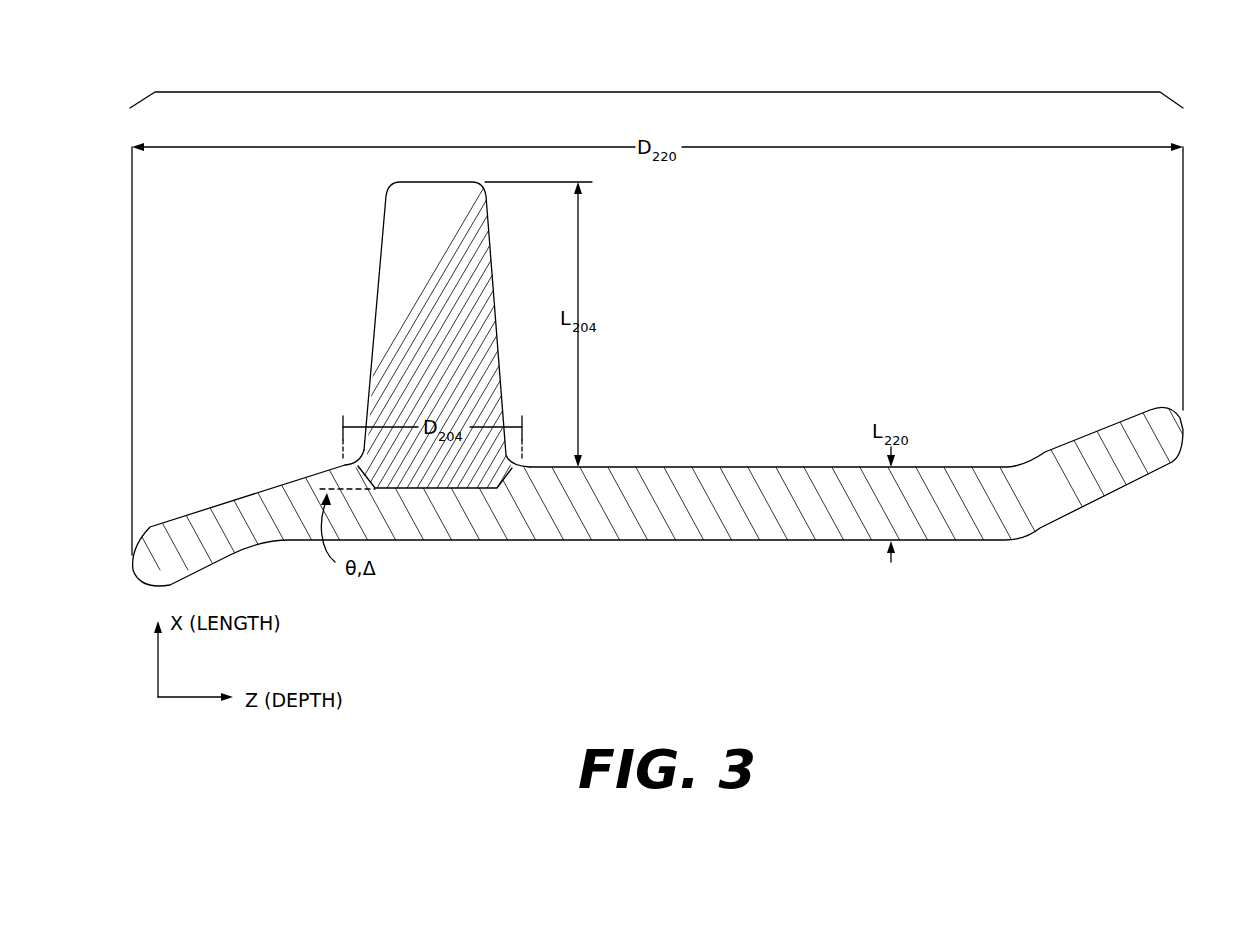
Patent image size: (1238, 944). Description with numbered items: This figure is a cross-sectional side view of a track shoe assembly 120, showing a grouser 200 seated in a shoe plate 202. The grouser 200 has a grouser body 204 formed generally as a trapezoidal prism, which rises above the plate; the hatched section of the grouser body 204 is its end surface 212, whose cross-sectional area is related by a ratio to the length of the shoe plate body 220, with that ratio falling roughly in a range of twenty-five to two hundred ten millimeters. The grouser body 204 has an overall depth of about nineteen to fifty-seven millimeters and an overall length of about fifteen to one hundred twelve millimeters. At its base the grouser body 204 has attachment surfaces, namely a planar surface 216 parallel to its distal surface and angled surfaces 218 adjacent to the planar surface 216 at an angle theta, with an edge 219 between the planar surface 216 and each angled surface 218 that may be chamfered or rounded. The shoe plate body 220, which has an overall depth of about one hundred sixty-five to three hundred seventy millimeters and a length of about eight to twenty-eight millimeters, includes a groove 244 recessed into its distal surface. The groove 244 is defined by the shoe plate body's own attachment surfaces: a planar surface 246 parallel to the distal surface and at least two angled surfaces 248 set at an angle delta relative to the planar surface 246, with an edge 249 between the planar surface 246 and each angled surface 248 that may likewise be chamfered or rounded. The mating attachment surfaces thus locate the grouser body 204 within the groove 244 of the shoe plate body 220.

The track shoe assembly 120 is at (645, 92).
The grouser 200 is at (338, 237).
The shoe plate 202 is at (1124, 538).
The grouser body 204 is at (384, 213).
The end surface 212 is at (437, 236).
The planar surface 216 is at (418, 489).
The angled surfaces 218 is at (390, 440).
The edge 219 is at (383, 489).
The shoe plate body 220 is at (1172, 462).
The groove 244 is at (450, 489).
The planar surface 246 is at (475, 489).
The angled surfaces 248 is at (372, 489).
The edge 249 is at (373, 490).